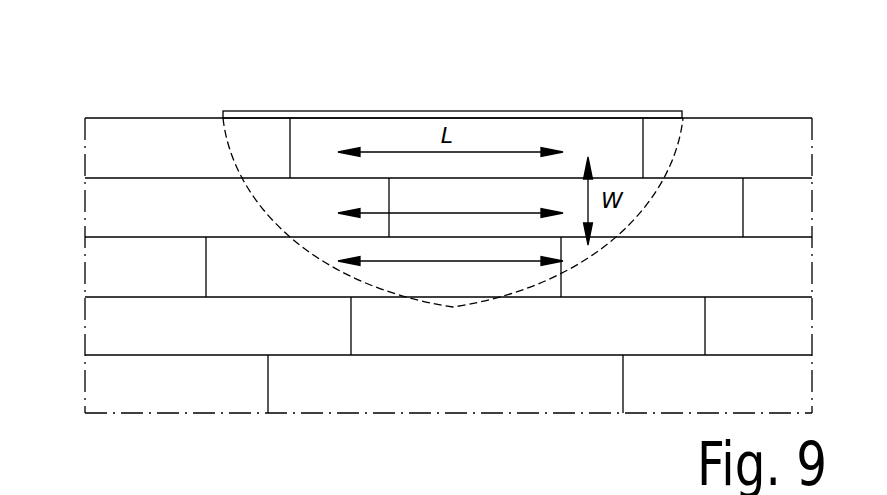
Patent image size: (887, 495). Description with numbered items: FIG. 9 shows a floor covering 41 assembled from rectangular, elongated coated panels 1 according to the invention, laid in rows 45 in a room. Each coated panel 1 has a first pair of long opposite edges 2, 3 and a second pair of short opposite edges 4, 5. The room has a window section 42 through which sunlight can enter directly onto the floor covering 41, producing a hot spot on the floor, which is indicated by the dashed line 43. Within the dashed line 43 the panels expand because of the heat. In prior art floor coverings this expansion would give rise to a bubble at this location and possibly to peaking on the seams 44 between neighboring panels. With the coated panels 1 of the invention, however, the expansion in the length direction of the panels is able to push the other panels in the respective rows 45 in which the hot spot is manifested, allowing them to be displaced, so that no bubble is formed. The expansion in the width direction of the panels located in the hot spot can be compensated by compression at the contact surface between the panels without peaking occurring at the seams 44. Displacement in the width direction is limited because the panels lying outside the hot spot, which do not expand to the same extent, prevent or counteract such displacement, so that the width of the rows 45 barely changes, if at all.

The coated panel 1 is at (785, 146).
The long edge 2 is at (317, 237).
The long edge 3 is at (257, 237).
The short edge 4 is at (643, 162).
The short edge 5 is at (645, 141).
The floor covering 41 is at (117, 130).
The window section 42 is at (421, 114).
The dashed line 43 is at (327, 268).
The seams 44 is at (288, 135).
The rows 45 is at (68, 120).